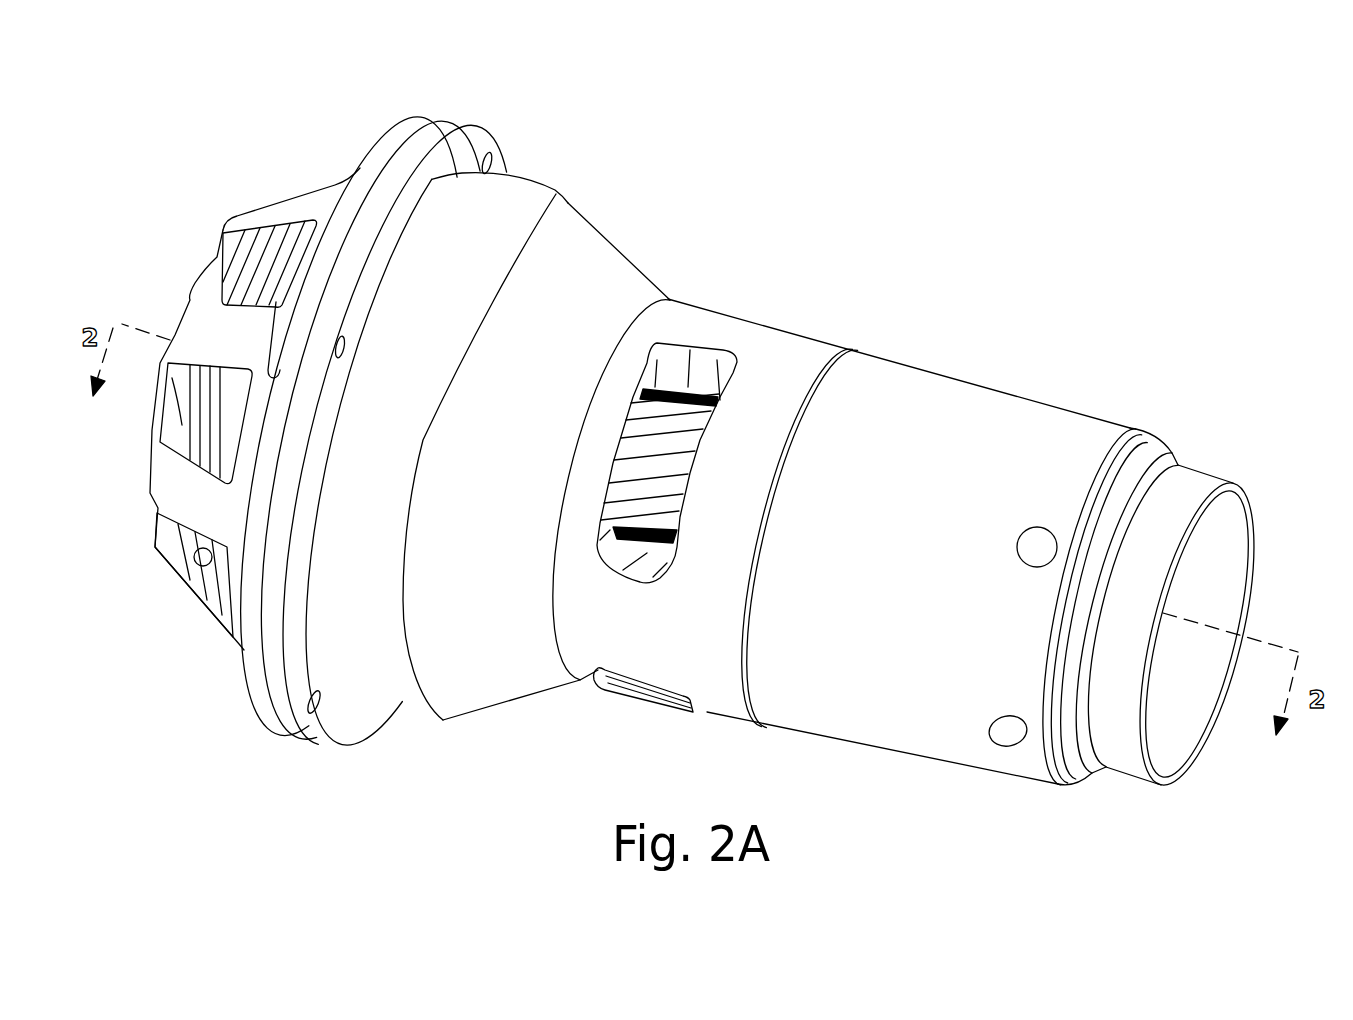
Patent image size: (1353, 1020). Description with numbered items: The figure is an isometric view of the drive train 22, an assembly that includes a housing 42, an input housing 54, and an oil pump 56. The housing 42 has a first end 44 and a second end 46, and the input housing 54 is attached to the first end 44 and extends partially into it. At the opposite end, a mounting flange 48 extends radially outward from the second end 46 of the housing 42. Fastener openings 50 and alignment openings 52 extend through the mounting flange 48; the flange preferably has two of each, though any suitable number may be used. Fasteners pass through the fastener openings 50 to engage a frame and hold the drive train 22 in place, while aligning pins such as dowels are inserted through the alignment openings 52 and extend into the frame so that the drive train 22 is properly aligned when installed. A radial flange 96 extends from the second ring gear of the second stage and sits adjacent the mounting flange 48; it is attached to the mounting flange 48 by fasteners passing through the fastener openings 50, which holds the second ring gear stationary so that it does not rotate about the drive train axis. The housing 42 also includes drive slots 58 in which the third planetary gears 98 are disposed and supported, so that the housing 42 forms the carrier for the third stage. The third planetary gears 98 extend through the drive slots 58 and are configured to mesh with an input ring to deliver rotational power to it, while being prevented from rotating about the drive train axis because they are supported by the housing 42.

The drive train 22 is at (722, 423).
The housing 42 is at (838, 329).
The first end 44 is at (1127, 428).
The second end 46 is at (532, 193).
The mounting flange 48 is at (448, 126).
The fastener opening 50 is at (492, 166).
The alignment opening 52 is at (350, 348).
The input housing 54 is at (1232, 528).
The oil pump 56 is at (250, 220).
The drive slots 58 is at (708, 362).
The radial flange 96 is at (414, 124).
The third planetary gears 98 is at (697, 470).